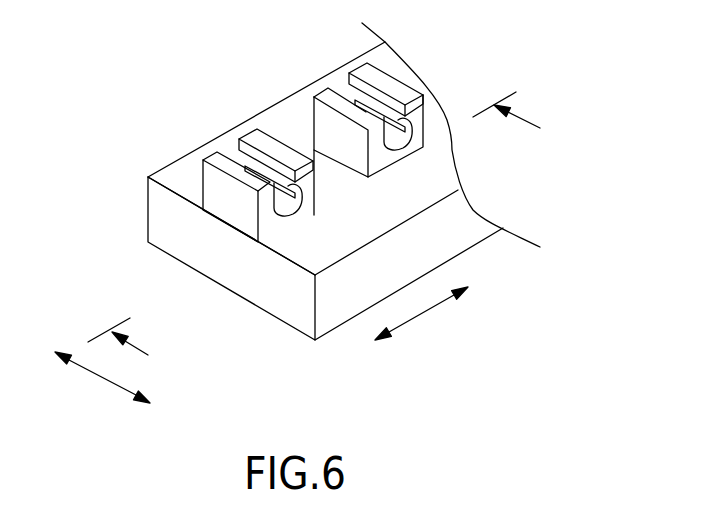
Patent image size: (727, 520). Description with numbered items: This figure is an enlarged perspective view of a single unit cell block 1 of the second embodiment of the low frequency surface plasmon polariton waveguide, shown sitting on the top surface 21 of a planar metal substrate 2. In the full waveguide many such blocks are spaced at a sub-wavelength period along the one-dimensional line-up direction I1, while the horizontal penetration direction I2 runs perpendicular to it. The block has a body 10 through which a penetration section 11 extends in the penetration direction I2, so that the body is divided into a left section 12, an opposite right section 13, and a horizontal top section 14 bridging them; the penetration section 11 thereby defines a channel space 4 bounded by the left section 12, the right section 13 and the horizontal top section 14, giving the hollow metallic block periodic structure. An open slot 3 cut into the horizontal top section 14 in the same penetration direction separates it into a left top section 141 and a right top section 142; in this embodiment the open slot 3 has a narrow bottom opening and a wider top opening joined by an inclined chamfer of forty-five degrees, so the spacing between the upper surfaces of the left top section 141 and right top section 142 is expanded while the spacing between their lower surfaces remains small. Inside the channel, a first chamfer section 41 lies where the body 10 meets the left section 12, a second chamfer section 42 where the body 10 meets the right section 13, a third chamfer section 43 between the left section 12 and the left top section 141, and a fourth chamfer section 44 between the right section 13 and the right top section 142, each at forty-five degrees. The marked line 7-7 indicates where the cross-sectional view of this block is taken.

The unit cell block 1 is at (181, 168).
The planar metal substrate 2 is at (450, 234).
The top surface 21 is at (437, 182).
The open slot 3 is at (246, 199).
The channel space 4 is at (304, 217).
The first chamfer section 41 is at (292, 217).
The second chamfer section 42 is at (318, 210).
The third chamfer section 43 is at (272, 220).
The fourth chamfer section 44 is at (276, 160).
The body 10 is at (306, 230).
The penetration section 11 is at (315, 177).
The left section 12 is at (273, 202).
The right section 13 is at (315, 193).
The horizontal top section 14 is at (281, 178).
The left top section 141 is at (268, 196).
The right top section 142 is at (295, 142).
The line 7- 7 is at (318, 234).
The one-dimensional line-up direction I1 is at (420, 317).
The horizontal penetration direction I2 is at (103, 381).